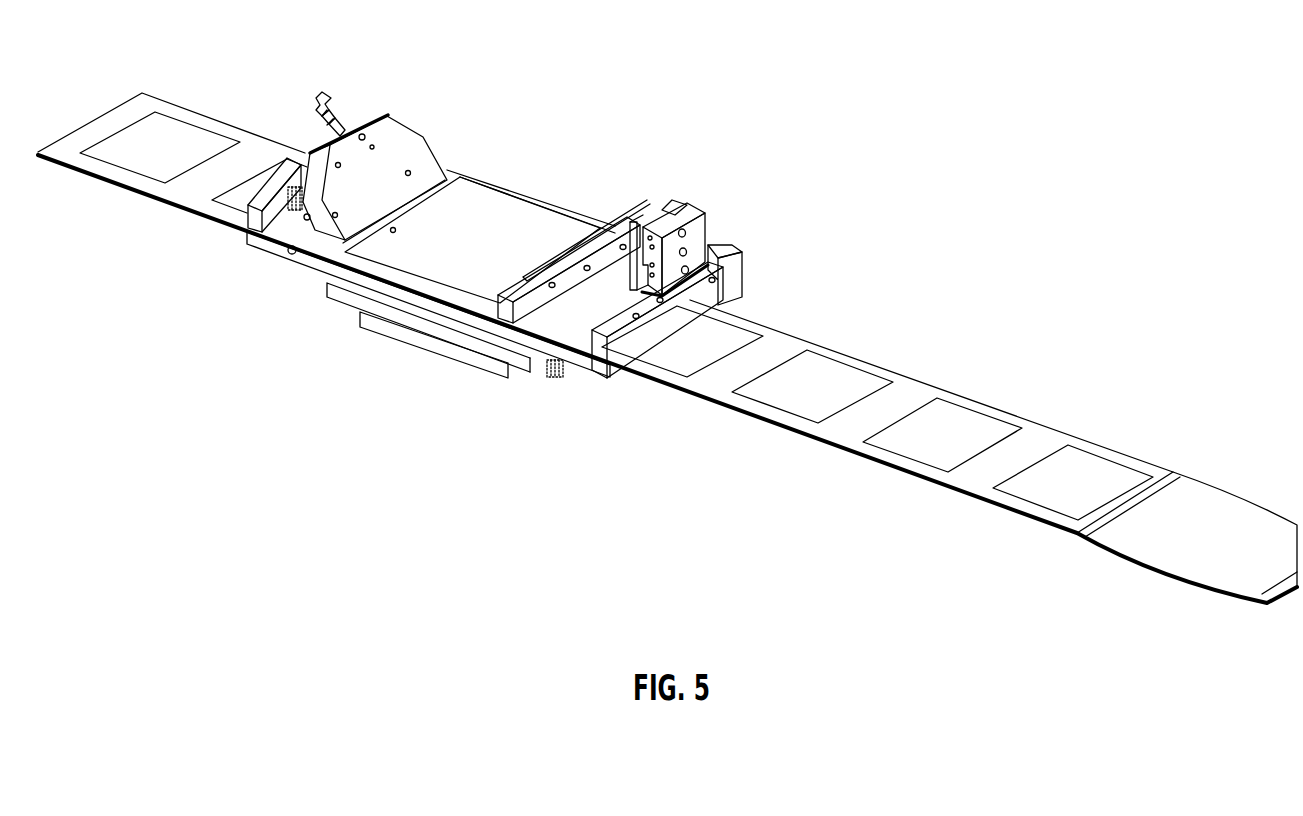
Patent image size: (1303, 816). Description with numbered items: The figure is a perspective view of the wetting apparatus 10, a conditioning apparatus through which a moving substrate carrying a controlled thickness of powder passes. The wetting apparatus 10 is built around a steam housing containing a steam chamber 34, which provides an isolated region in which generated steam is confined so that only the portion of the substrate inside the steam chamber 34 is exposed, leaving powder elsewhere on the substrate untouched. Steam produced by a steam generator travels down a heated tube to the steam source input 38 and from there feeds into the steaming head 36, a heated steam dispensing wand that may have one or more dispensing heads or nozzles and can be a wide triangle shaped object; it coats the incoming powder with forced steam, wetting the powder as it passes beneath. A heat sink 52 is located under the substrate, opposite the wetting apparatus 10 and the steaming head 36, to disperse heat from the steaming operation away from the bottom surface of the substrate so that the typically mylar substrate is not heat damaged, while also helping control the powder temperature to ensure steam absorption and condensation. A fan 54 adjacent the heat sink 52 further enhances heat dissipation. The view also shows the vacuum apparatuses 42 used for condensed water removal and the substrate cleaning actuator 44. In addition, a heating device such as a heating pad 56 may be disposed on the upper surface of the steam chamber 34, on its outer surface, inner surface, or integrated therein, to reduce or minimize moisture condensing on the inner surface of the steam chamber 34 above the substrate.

The wetting apparatus 10 is at (722, 52).
The steam chamber 34 is at (317, 258).
The steaming head 36 is at (405, 138).
The steam source input 38 is at (343, 102).
The vacuum apparatuses 42 is at (252, 215).
The substrate cleaning actuator 44 is at (600, 343).
The heat sink 52 is at (355, 298).
The fan 54 is at (432, 348).
The heating pad 56 is at (518, 220).